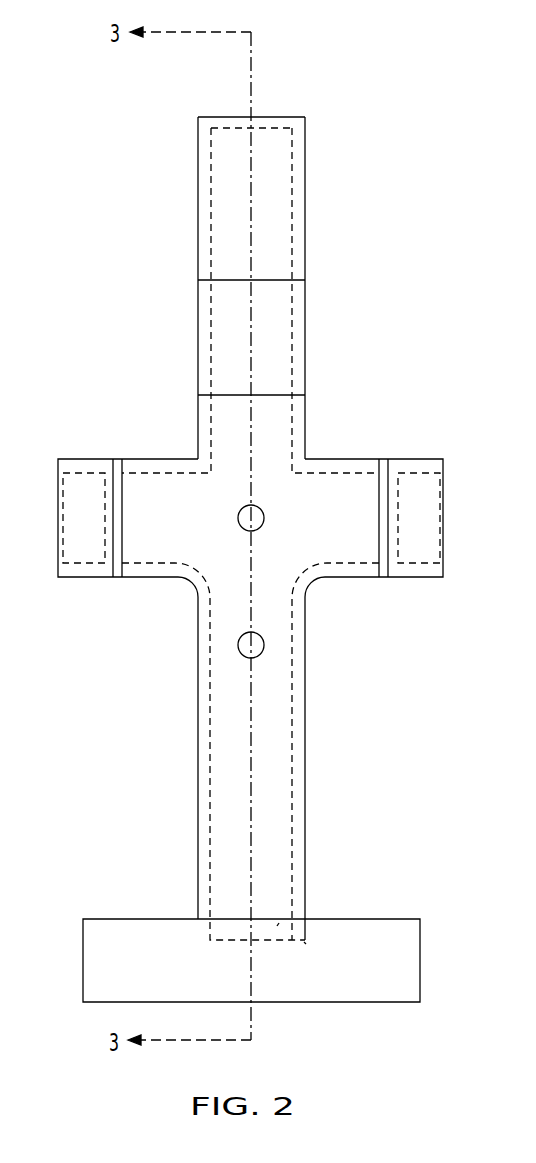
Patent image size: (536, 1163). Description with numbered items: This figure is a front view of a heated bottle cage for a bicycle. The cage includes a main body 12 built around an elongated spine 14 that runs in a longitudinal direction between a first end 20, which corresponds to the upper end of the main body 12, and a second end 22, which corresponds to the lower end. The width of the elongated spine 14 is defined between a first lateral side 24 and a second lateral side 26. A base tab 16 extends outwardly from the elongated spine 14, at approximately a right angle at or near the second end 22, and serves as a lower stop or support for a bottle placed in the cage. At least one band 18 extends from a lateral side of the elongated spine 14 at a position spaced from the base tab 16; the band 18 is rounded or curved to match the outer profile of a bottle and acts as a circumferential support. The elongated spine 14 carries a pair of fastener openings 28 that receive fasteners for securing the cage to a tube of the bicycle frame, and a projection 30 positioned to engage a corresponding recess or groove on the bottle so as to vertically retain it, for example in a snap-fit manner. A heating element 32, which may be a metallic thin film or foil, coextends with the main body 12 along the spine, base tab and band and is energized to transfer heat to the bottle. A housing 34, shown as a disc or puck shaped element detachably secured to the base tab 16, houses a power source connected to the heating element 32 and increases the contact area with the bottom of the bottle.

The main body 12 is at (197, 222).
The elongated spine 14 is at (197, 430).
The base tab 16 is at (278, 925).
The band 18 is at (366, 459).
The first end 20 is at (279, 117).
The second end 22 is at (305, 943).
The first lateral side 24 is at (197, 153).
The second lateral side 26 is at (305, 160).
The fastener opening 28 is at (264, 516).
The projection 30 is at (305, 333).
The heating element 32 is at (288, 210).
The housing 34 is at (95, 965).